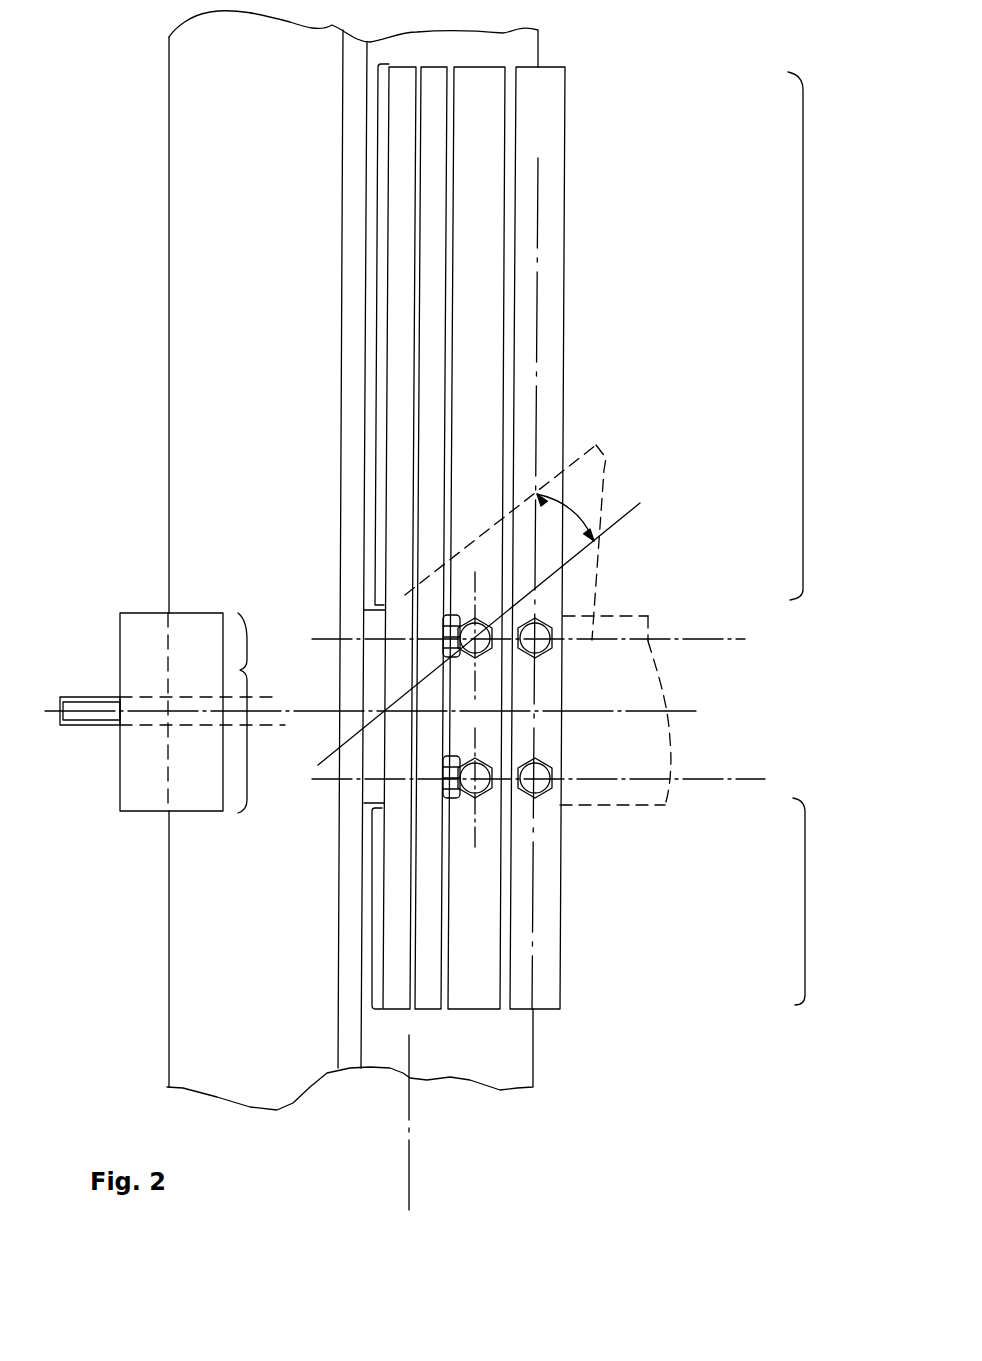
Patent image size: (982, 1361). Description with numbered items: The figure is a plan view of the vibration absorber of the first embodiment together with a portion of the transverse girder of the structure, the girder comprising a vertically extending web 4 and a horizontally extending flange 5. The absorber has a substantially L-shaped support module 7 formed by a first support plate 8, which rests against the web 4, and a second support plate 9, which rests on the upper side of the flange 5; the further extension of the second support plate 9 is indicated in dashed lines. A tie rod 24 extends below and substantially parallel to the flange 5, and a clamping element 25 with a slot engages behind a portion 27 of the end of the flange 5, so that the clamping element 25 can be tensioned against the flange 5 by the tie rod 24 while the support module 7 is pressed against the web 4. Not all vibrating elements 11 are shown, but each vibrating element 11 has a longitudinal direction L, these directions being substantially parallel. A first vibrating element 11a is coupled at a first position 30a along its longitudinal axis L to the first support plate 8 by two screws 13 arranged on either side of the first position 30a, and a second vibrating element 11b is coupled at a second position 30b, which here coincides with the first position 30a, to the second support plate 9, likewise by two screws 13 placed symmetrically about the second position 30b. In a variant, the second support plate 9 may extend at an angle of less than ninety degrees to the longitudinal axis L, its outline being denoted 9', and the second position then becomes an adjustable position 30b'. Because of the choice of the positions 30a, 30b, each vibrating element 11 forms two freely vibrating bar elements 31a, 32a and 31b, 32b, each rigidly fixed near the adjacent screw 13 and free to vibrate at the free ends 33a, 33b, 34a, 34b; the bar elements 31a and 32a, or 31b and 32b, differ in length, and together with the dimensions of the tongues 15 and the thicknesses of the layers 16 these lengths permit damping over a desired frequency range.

The web 4 is at (350, 1053).
The flange 5 is at (283, 1073).
The support module 7 is at (718, 656).
The first support plate 8 is at (373, 660).
The second support plate 9 is at (615, 735).
The outline of second support plate (variant) 9' is at (542, 537).
The vibrating element 11 is at (565, 627).
The first vibrating element 11a is at (523, 627).
The second vibrating element 11b is at (490, 373).
The screw 13 is at (447, 631).
The tongue 15 is at (395, 997).
The layer 16 is at (412, 1018).
The tie rod 24 is at (92, 717).
The clamping element 25 is at (135, 800).
The portion of the flange end 27 is at (248, 666).
The first position 30a is at (451, 691).
The second position 30b is at (451, 691).
The second position (variant) 30b' is at (528, 634).
The bar element 31a is at (376, 317).
The bar element 31b is at (803, 347).
The bar element 32a is at (370, 895).
The bar element 32b is at (805, 903).
The free end 33a is at (383, 55).
The free end 33b is at (573, 58).
The free end 34a is at (375, 1018).
The free end 34b is at (573, 1015).
The longitudinal axis L is at (538, 215).